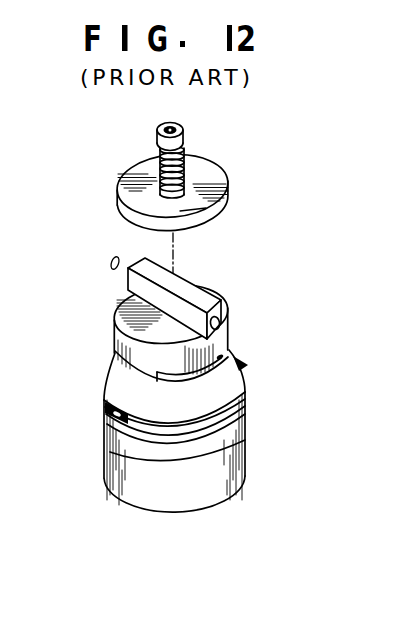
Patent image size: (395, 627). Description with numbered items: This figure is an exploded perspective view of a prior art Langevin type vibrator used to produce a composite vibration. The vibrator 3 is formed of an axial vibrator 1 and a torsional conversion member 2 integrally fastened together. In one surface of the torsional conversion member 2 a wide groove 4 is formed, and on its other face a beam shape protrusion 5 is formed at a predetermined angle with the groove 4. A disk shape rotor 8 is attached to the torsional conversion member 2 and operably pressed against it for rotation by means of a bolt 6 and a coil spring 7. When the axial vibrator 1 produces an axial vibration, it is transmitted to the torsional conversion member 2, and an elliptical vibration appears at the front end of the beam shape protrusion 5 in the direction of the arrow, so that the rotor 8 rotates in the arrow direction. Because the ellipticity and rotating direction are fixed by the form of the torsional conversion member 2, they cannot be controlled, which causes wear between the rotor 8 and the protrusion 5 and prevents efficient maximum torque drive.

The axial vibrator 1 is at (118, 466).
The torsional conversion member 2 is at (124, 302).
The vibrator 3 is at (235, 462).
The wide groove 4 is at (217, 359).
The beam shape protrusion 5 is at (202, 302).
The bolt 6 is at (186, 136).
The coil spring 7 is at (185, 177).
The disk shape rotor 8 is at (134, 170).